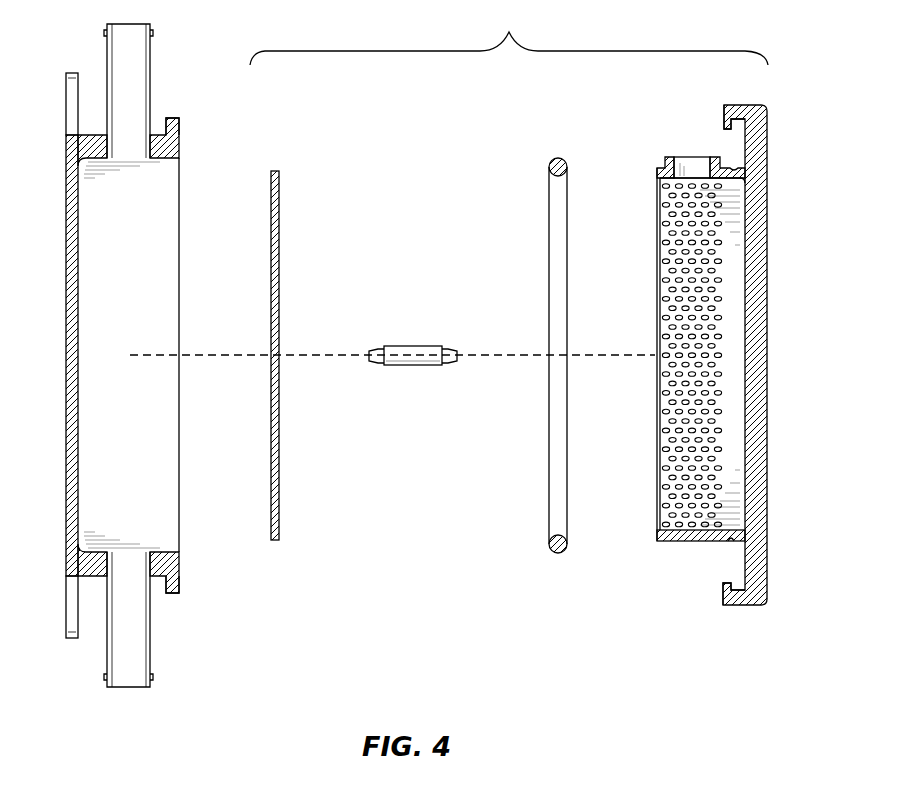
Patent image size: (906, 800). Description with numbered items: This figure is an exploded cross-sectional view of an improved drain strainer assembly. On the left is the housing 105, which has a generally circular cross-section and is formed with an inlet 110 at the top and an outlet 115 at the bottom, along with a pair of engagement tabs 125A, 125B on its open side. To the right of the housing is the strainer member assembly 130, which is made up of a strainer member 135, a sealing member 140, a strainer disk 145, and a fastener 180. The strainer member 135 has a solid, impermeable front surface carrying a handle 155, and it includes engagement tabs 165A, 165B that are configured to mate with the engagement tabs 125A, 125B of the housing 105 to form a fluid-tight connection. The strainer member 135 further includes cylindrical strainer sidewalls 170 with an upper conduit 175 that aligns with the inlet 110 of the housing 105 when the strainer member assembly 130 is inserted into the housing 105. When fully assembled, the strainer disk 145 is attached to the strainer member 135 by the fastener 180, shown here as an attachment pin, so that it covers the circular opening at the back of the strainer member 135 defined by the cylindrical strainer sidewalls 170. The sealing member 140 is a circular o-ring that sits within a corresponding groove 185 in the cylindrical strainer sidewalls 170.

The housing 105 is at (68, 318).
The inlet 110 is at (117, 57).
The outlet 115 is at (118, 652).
The engagement tab 125A is at (178, 127).
The engagement tab 125B is at (173, 594).
The strainer member assembly 130 is at (509, 34).
The strainer member 135 is at (618, 115).
The sealing member 140 is at (553, 508).
The strainer disk 145 is at (280, 199).
The handle 155 is at (763, 313).
The engagement tab 165A is at (724, 112).
The engagement tab 165B is at (722, 587).
The cylindrical strainer sidewalls 170 is at (673, 541).
The upper conduit 175 is at (692, 166).
The fastener 180 is at (414, 352).
The groove 185 is at (732, 540).